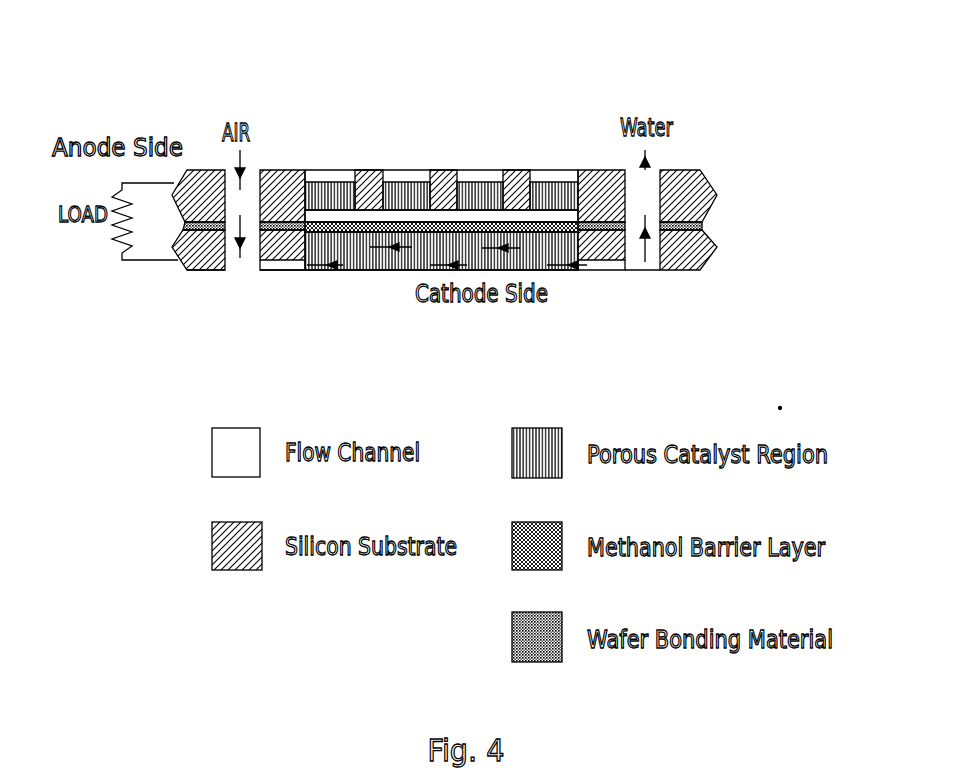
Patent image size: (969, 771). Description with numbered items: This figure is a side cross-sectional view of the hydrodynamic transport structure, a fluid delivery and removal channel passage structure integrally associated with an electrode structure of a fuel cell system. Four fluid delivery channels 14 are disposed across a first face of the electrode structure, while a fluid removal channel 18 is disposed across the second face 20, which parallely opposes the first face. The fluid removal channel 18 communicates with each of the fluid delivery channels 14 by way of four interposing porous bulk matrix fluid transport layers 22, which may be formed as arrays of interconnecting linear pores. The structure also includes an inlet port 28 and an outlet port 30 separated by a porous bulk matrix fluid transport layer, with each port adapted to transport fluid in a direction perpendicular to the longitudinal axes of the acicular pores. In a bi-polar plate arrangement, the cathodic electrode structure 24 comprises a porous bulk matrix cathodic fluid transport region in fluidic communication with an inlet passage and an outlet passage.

The fluid delivery channel 14 is at (560, 168).
The fluid removal channel 18 is at (517, 218).
The second face 20 is at (255, 262).
The porous bulk matrix fluid transport layer 22 is at (556, 168).
The cathodic electrode structure 24 is at (707, 255).
The inlet port 28 is at (283, 268).
The outlet port 30 is at (607, 263).